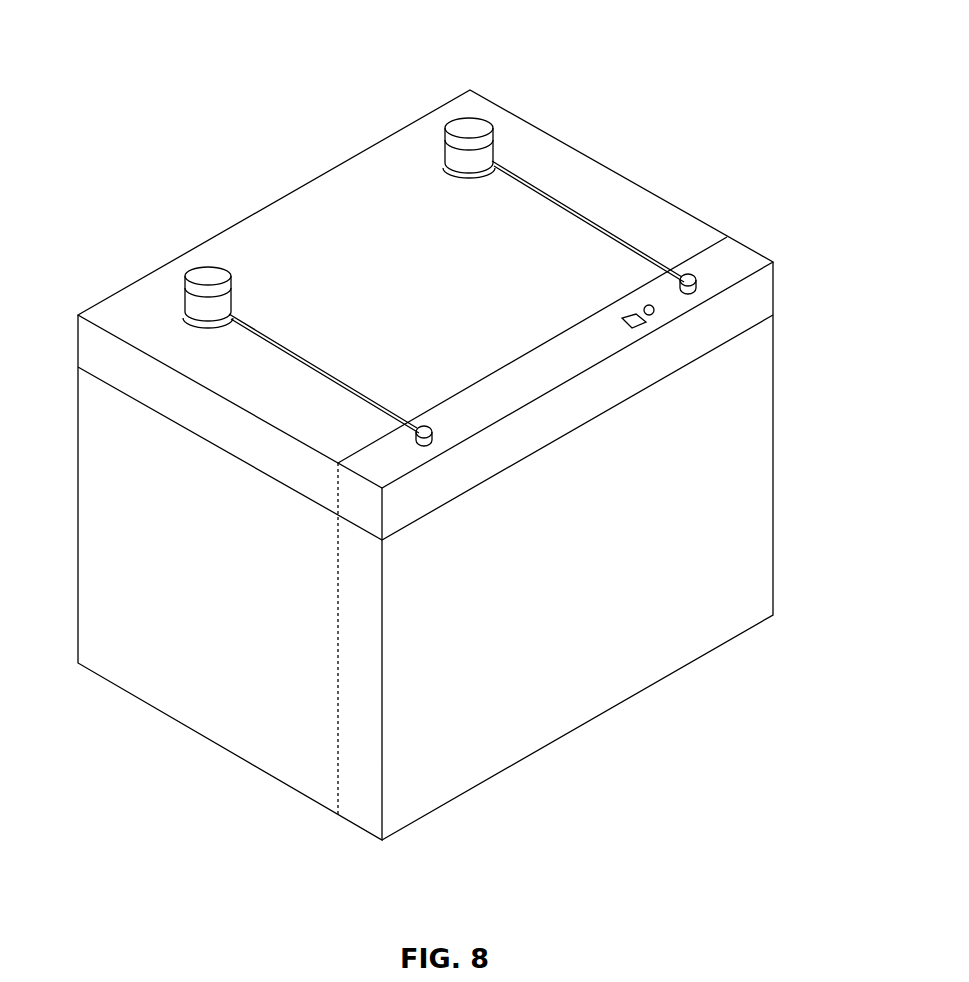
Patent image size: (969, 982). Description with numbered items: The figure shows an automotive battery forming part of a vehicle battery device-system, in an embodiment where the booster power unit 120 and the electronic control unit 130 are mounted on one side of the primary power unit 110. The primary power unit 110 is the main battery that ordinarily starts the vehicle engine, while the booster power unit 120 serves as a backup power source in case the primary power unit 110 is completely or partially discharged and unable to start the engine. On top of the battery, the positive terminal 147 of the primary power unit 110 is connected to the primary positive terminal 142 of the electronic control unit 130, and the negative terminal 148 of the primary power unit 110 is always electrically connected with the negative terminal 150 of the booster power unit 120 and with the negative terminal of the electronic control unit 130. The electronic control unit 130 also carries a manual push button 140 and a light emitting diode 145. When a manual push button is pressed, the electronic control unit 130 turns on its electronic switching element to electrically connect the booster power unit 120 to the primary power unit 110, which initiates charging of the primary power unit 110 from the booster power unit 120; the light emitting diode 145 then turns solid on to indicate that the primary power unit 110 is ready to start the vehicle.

The primary power unit 110 is at (192, 683).
The booster power unit 120 is at (720, 545).
The electronic control unit 130 is at (742, 310).
The manual push button 140 is at (636, 327).
The primary positive terminal 142 is at (440, 166).
The light emitting diode 145 is at (656, 312).
The positive terminal 147 is at (473, 123).
The negative terminal 148 is at (203, 273).
The negative terminal 150 is at (187, 323).